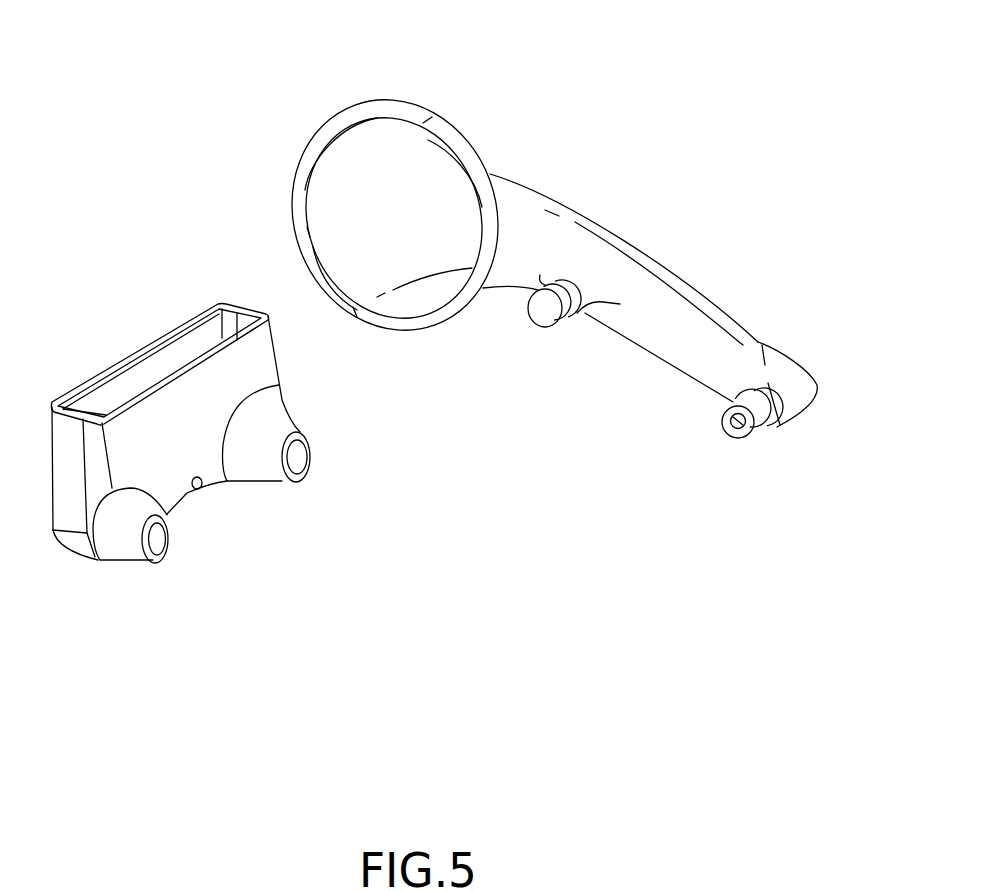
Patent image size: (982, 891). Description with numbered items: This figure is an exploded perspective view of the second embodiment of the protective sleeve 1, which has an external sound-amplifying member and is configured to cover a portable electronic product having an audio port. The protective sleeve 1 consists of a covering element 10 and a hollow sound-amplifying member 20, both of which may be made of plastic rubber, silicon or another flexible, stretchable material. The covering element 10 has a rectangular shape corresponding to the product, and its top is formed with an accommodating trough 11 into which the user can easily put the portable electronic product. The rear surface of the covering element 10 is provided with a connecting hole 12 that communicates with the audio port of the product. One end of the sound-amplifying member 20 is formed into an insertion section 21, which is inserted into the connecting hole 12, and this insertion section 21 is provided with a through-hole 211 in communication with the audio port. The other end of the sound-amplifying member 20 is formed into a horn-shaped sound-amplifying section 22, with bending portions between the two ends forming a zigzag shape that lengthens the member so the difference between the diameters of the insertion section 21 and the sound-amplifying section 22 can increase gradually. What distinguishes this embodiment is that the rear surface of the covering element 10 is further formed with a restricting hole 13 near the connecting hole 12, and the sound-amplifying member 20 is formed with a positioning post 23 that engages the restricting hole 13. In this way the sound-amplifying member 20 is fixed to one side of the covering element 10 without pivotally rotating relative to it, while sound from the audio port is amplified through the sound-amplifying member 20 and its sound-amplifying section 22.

The protective sleeve 1 is at (607, 23).
The covering element 10 is at (253, 368).
The accommodating trough 11 is at (161, 363).
The connecting hole 12 is at (158, 547).
The restricting hole 13 is at (303, 468).
The sound-amplifying member 20 is at (607, 248).
The insertion section 21 is at (749, 437).
The through-hole 211 is at (727, 420).
The sound-amplifying section 22 is at (380, 143).
The positioning post 23 is at (550, 326).